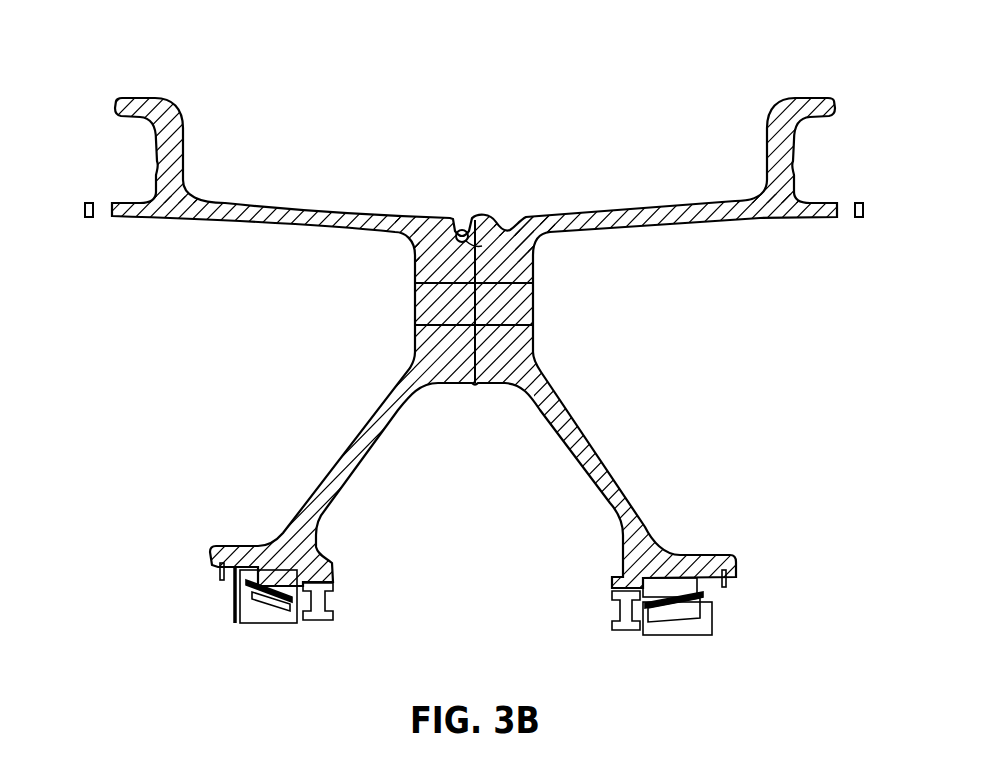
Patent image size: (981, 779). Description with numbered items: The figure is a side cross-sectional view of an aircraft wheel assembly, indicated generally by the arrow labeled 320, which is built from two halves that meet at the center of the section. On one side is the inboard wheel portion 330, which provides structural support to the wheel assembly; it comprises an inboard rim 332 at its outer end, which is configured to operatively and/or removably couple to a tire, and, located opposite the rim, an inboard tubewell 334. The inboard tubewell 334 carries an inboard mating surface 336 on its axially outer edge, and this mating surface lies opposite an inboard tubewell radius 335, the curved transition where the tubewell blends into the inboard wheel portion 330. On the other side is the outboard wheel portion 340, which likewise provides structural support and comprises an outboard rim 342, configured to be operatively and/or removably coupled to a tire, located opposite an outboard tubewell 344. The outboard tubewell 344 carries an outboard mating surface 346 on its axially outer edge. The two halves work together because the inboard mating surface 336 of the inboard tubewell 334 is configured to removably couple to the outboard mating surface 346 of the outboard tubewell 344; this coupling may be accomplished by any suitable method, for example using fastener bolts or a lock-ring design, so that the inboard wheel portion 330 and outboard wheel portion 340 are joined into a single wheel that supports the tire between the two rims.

The rotor hub assembly 320 is at (362, 110).
The inboard wheel portion 330 is at (264, 212).
The inboard rim 332 is at (123, 162).
The inboard tubewell 334 is at (440, 257).
The inboard tubewell radius 335 is at (410, 235).
The inboard mating surface 336 is at (465, 229).
The outboard wheel portion 340 is at (652, 213).
The outboard rim 342 is at (808, 165).
The outboard tubewell 344 is at (520, 240).
The outboard mating surface 346 is at (497, 238).